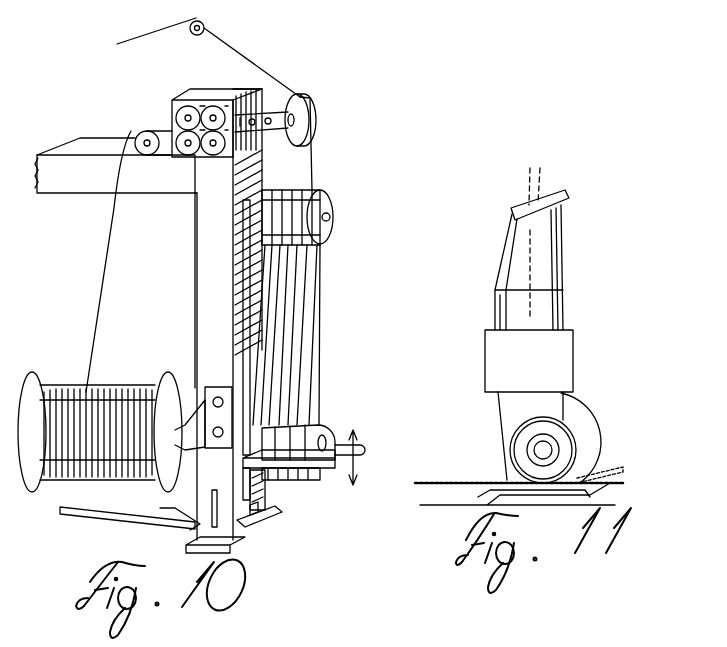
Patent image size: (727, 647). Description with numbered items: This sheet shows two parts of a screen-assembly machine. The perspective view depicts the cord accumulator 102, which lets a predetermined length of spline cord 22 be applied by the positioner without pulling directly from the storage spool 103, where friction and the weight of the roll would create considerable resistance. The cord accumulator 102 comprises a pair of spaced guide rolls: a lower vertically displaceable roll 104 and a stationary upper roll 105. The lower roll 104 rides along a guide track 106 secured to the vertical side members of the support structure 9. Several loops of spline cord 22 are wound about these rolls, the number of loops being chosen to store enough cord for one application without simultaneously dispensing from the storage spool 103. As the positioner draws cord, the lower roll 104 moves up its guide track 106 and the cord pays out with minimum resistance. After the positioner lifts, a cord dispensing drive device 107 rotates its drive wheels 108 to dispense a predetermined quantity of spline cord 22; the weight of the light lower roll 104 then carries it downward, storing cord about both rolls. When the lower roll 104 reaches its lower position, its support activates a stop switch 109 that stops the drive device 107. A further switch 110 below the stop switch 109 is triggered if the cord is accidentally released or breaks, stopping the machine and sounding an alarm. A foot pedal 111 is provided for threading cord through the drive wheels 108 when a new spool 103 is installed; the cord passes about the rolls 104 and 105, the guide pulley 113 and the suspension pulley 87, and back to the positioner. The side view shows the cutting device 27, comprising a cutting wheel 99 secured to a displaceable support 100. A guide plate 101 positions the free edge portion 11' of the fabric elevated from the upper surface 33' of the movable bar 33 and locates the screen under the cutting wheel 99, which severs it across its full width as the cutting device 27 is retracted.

In FIG. 10, the support structure 9 is at (115, 141).
In FIG. 10, the spline cord 22 is at (286, 96).
In FIG. 11, the cutting device 27 is at (472, 328).
In FIG. 10, the suspension pulley 87 is at (197, 36).
In FIG. 11, the cutting wheel 99 is at (566, 462).
In FIG. 11, the displaceable support 100 is at (548, 254).
In FIG. 11, the guide plate 101 is at (488, 505).
In FIG. 10, the cord accumulator 102 is at (375, 194).
In FIG. 10, the storage spool 103 is at (172, 392).
In FIG. 10, the lower vertically displaceable roll 104 is at (330, 437).
In FIG. 10, the stationary upper roll 105 is at (331, 224).
In FIG. 10, the guide track 106 is at (243, 266).
In FIG. 10, the cord dispensing drive device 107 is at (219, 92).
In FIG. 10, the drive wheels 108 is at (183, 108).
In FIG. 10, the stop switch 109 is at (262, 490).
In FIG. 10, the further switch 110 is at (265, 518).
In FIG. 10, the foot pedal 111 is at (195, 522).
In FIG. 10, the guide pulley 113 is at (306, 128).
In FIG. 11, the free edge portion 11' is at (520, 456).
In FIG. 11, the movable bar 33 is at (540, 494).
In FIG. 11, the upper surface 33' is at (618, 470).